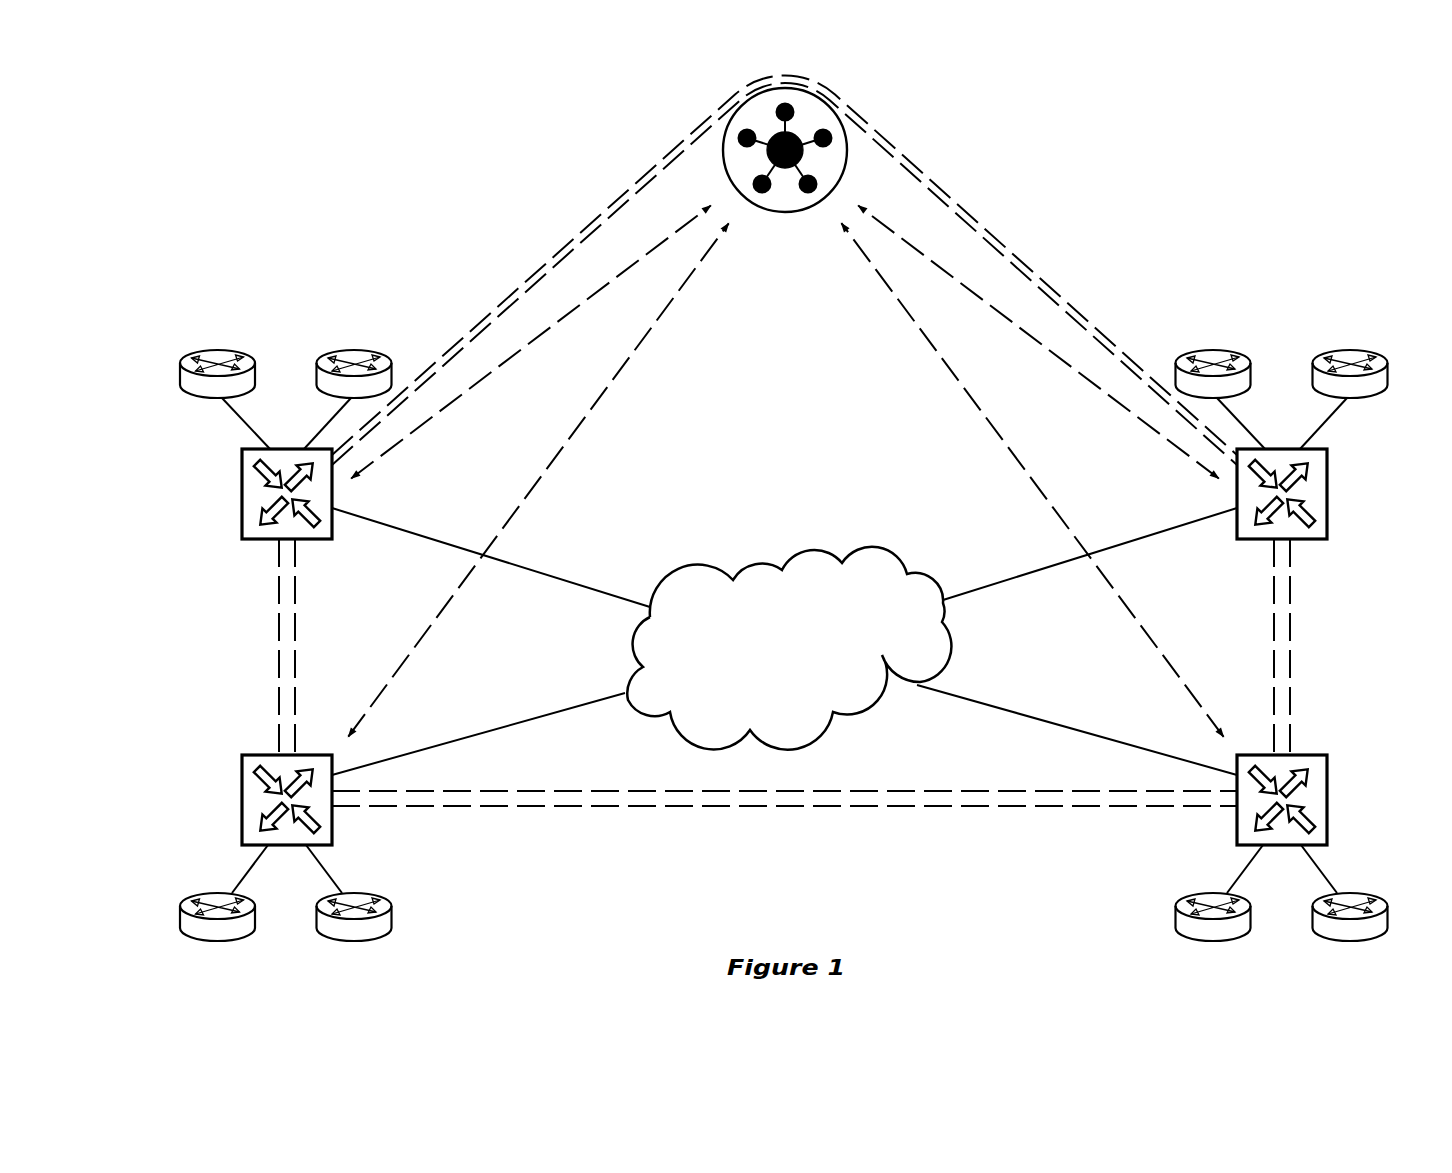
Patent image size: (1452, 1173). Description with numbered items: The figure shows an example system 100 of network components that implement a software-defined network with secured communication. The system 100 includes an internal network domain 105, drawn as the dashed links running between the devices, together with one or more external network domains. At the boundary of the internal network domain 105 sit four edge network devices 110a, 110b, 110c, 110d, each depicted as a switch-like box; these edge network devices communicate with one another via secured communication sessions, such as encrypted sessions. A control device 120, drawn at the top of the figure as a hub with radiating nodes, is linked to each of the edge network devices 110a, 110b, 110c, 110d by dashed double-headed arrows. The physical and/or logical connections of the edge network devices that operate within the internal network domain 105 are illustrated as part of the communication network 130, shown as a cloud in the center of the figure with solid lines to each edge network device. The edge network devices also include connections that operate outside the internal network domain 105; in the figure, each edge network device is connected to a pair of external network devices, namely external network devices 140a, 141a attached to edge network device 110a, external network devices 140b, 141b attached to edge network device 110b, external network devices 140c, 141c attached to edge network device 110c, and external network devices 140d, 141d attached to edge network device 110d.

The system 100 is at (1364, 105).
The internal network domain 105 is at (1040, 280).
The edge network device 110a is at (242, 491).
The edge network device 110b is at (242, 797).
The edge network device 110c is at (1327, 492).
The edge network device 110d is at (1327, 798).
The control device 120 is at (846, 151).
The communication network 130 is at (800, 660).
The external network device 140a is at (184, 362).
The external network device 140b is at (184, 904).
The external network device 140c is at (1248, 362).
The external network device 140d is at (1180, 904).
The external network device 141a is at (389, 362).
The external network device 141b is at (389, 904).
The external network device 141c is at (1383, 362).
The external network device 141d is at (1386, 904).